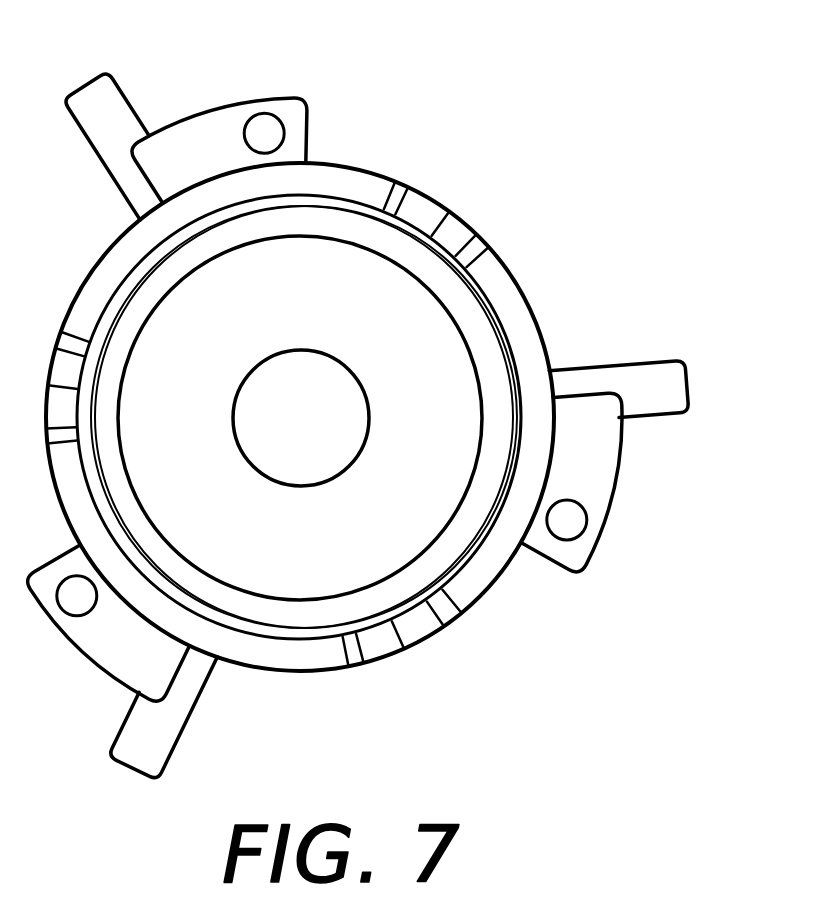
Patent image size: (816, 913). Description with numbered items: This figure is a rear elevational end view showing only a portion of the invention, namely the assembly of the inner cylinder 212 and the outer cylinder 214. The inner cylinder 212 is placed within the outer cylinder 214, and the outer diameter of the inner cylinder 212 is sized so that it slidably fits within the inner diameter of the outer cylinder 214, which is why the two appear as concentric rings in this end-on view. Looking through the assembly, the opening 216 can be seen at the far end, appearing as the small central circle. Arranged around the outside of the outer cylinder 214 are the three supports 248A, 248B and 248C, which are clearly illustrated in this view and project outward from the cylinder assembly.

The inner cylinder 212 is at (310, 240).
The outer cylinder 214 is at (510, 298).
The opening 216 is at (336, 440).
The support 248A is at (113, 107).
The support 248B is at (183, 702).
The support 248C is at (590, 368).